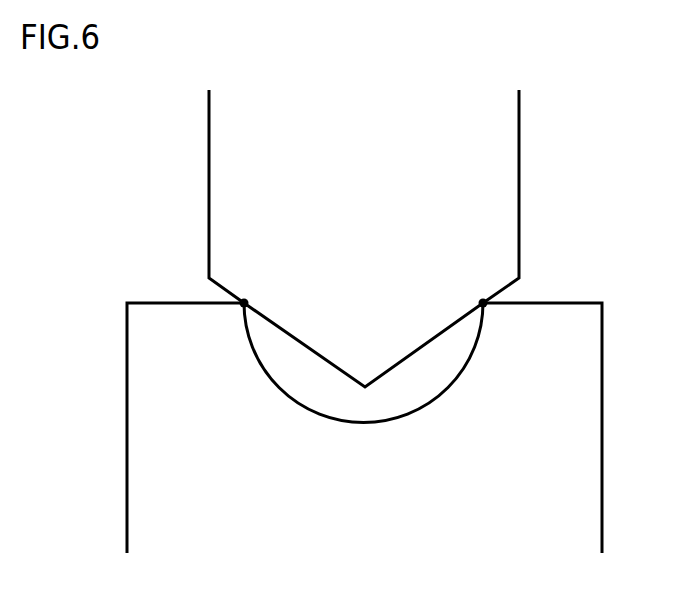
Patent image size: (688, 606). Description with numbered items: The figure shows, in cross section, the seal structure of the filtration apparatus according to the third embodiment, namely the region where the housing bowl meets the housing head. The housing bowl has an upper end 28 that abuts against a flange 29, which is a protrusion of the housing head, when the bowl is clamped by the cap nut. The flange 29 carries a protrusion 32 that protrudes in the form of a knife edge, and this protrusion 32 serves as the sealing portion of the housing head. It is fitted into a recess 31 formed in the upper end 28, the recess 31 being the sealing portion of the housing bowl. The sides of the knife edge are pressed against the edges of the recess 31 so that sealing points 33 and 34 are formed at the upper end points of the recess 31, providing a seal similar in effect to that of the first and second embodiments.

The upper end 28 is at (512, 494).
The flange 29 is at (282, 175).
The recess 31 is at (433, 403).
The protrusion 32 is at (363, 335).
The sealing point 33 is at (244, 302).
The sealing point 34 is at (483, 303).